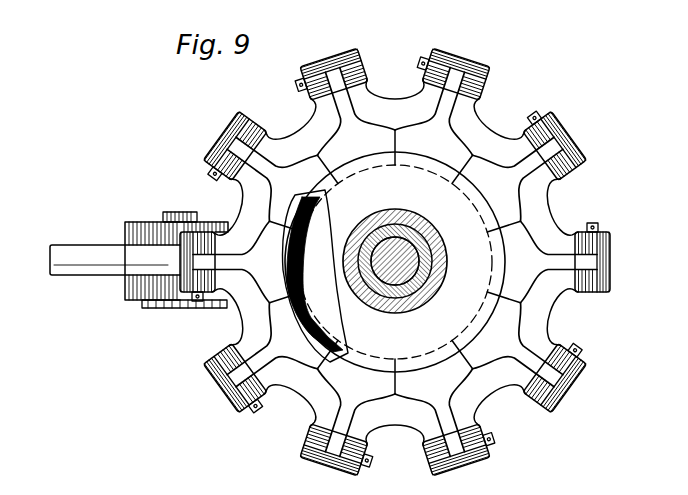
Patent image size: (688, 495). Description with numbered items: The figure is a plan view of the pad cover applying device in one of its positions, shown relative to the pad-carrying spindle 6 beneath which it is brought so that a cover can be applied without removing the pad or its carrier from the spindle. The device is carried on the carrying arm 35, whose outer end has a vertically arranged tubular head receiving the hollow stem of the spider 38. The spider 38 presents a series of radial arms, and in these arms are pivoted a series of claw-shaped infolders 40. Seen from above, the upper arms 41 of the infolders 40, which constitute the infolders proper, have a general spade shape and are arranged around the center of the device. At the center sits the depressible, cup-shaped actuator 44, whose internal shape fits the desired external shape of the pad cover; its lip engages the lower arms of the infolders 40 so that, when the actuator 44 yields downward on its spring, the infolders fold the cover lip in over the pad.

The spindle 6 is at (416, 226).
The carrying arm 35 is at (395, 261).
The spider 38 is at (395, 249).
The infolders 40 is at (387, 261).
The upper arms of the infolders 41 is at (559, 254).
The depressible actuator 44 is at (440, 320).